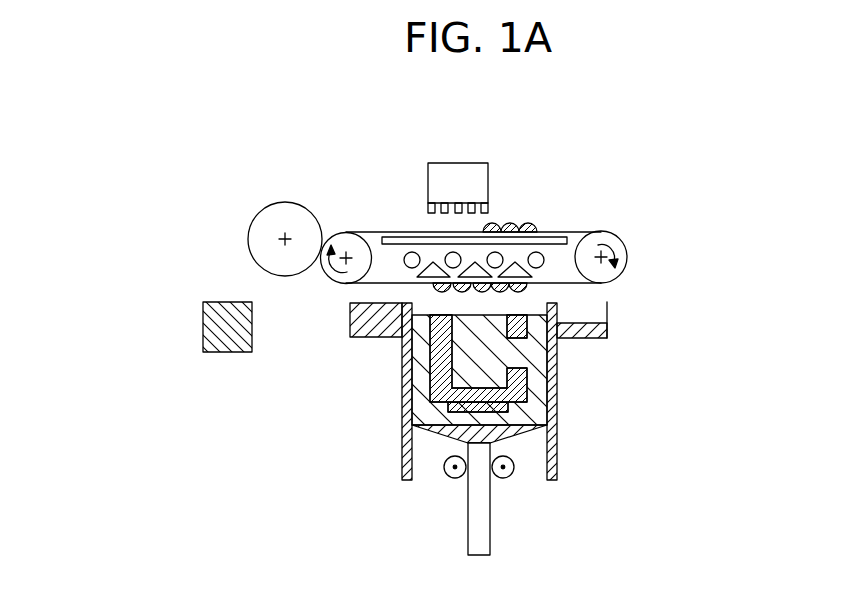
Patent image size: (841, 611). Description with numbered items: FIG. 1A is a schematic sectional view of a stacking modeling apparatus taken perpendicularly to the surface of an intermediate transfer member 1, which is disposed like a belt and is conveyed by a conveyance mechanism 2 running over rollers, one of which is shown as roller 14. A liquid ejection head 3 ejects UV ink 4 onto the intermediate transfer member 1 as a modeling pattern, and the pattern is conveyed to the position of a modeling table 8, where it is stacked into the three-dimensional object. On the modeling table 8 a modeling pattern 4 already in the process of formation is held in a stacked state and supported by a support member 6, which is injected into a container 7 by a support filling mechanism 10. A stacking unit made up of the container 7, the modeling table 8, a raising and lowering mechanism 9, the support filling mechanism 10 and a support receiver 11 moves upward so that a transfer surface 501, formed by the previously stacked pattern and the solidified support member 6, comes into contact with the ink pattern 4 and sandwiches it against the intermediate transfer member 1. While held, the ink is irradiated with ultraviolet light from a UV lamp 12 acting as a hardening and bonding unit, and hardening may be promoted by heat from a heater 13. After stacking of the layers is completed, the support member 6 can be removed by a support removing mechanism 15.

The intermediate transfer member 1 is at (406, 231).
The conveyance mechanism 2 is at (343, 240).
The liquid ejection head 3 is at (461, 171).
The UV ink 4 is at (527, 226).
The support member 6 is at (540, 357).
The container 7 is at (557, 435).
The modeling table 8 is at (512, 432).
The raising and lowering mechanism 9 is at (485, 500).
The support filling mechanism 10 is at (353, 322).
The support receiver 11 is at (602, 330).
The UV lamp 12 is at (530, 278).
The heater 13 is at (405, 264).
The roller 14 is at (258, 242).
The support removing mechanism 15 is at (213, 325).
The transfer surface 501 is at (456, 313).